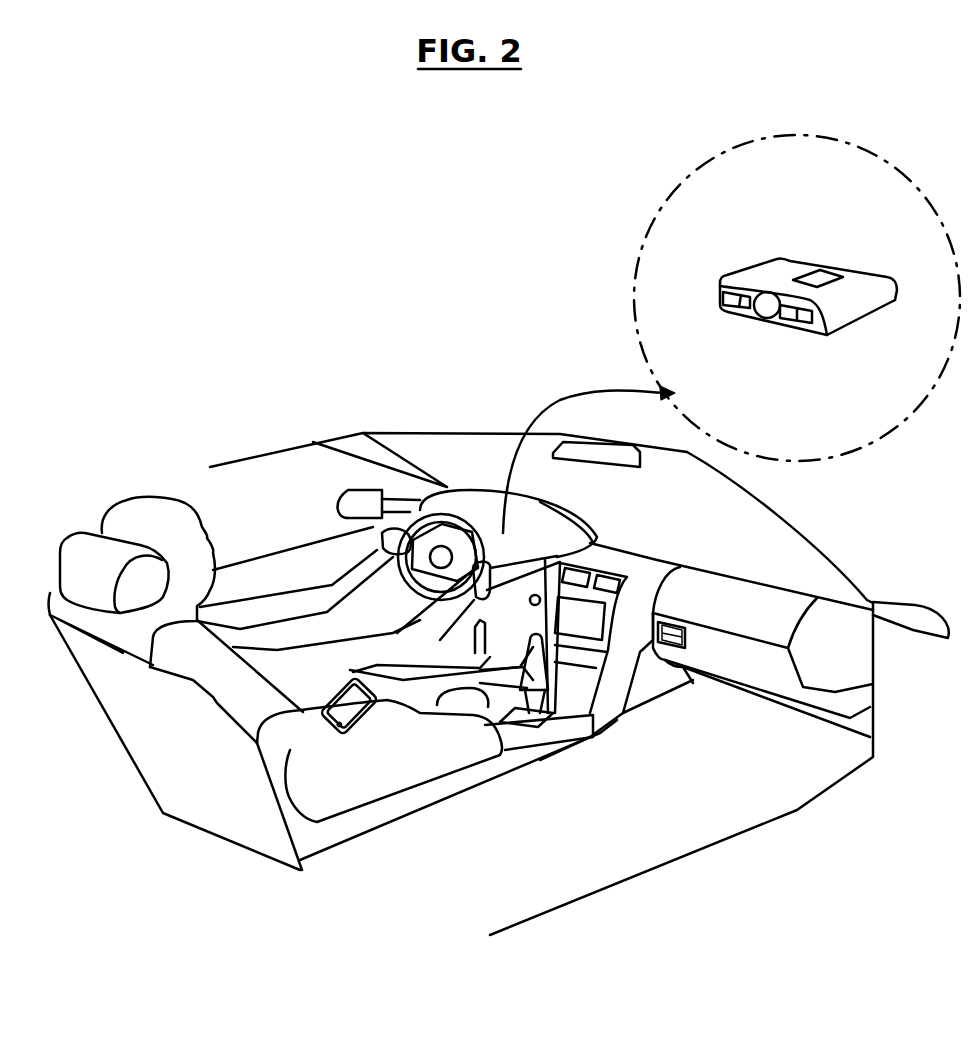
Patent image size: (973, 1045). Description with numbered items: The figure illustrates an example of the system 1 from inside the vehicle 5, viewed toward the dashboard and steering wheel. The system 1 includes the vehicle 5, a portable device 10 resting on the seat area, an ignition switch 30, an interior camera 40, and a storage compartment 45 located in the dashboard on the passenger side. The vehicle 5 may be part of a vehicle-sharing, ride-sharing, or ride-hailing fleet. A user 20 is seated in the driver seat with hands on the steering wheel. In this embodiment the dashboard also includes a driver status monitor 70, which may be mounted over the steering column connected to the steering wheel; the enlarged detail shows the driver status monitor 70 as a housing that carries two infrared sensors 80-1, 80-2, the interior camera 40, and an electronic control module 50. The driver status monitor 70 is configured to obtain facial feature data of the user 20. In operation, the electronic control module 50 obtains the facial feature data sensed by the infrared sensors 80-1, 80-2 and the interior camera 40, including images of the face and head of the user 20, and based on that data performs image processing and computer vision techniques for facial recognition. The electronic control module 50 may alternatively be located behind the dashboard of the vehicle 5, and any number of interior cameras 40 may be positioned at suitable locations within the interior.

The system 1 is at (140, 295).
The vehicle 5 is at (357, 432).
The portable device 10 is at (330, 697).
The user 20 is at (130, 497).
The ignition switch 30 is at (527, 632).
The interior camera 40 is at (764, 322).
The storage compartment 45 is at (710, 663).
The electronic control module 50 is at (831, 273).
The driver status monitor 70 is at (640, 268).
The infrared sensor 80-1 is at (742, 300).
The infrared sensor 80-2 is at (795, 318).